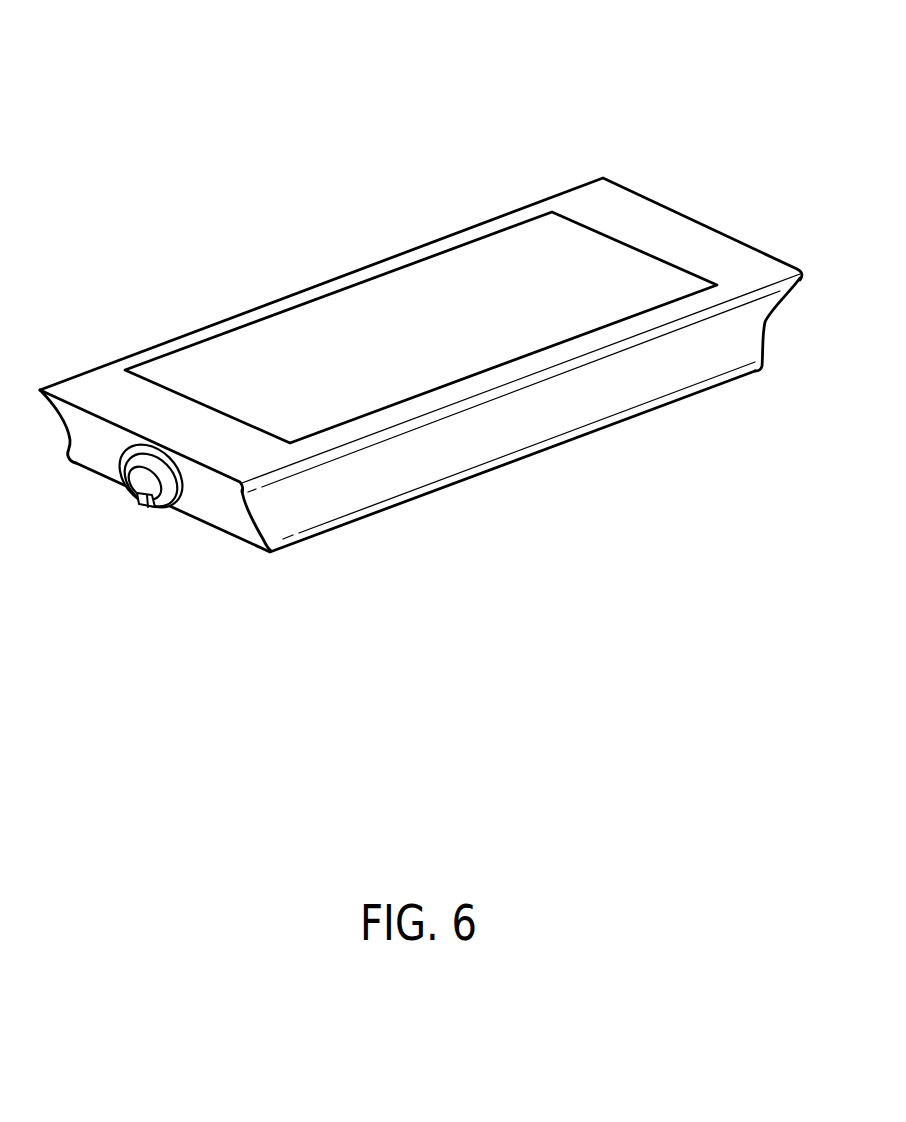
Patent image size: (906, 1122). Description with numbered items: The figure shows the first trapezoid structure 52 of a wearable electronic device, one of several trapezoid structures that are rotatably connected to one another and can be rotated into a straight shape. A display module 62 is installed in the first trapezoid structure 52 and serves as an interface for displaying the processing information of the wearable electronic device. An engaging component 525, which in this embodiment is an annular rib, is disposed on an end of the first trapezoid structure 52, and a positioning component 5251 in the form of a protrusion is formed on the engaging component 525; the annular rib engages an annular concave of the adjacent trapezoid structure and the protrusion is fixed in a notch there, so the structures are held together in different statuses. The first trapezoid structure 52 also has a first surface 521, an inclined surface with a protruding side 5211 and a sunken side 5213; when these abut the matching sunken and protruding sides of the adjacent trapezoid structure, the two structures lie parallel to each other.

The first trapezoid structure 52 is at (421, 362).
The display module 62 is at (348, 305).
The first surface 521 is at (420, 498).
The protruding side 5211 is at (236, 486).
The sunken side 5213 is at (262, 553).
The engaging component 525 is at (128, 527).
The positioning component 5251 is at (135, 508).